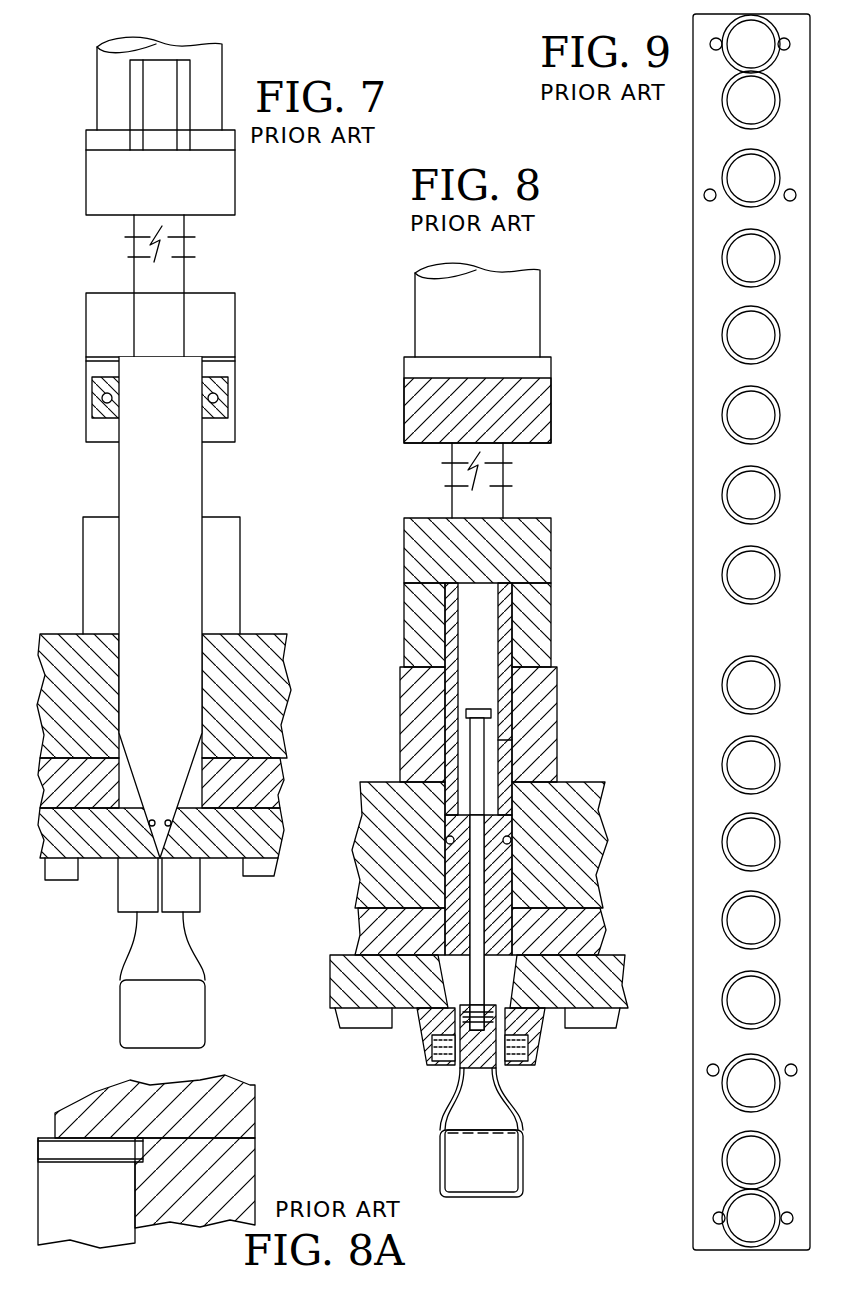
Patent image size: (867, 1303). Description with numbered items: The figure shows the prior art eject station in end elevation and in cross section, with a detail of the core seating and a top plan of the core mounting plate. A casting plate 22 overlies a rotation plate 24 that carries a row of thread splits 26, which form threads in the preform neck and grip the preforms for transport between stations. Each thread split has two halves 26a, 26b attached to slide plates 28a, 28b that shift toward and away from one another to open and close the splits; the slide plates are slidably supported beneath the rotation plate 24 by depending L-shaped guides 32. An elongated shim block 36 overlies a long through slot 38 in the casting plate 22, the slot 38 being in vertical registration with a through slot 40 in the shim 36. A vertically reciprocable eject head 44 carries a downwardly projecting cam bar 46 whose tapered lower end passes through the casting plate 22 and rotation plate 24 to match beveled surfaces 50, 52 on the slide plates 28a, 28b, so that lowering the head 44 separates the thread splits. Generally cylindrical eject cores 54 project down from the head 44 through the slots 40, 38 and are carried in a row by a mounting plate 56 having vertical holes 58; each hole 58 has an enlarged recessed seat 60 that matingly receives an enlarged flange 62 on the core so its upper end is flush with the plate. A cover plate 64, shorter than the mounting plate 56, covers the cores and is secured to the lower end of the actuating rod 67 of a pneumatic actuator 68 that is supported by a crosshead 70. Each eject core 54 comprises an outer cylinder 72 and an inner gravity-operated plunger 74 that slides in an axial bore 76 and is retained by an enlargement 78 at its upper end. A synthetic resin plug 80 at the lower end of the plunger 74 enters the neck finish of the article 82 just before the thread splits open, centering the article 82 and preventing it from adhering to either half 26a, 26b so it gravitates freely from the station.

In FIG. 7, the casting plate 22 is at (282, 684).
In FIG. 8, the casting plate 22 is at (590, 815).
In FIG. 7, the rotation plate 24 is at (280, 767).
In FIG. 8, the rotation plate 24 is at (590, 926).
In FIG. 7, the thread splits 26 is at (154, 942).
In FIG. 8, the thread splits 26 is at (503, 1067).
In FIG. 7, the thread split half 26a is at (200, 905).
In FIG. 8, the thread split half 26a is at (545, 1052).
In FIG. 7, the thread split half 26b is at (134, 920).
In FIG. 8, the thread split half 26b is at (428, 1066).
In FIG. 7, the slide plate 28a is at (235, 860).
In FIG. 8, the slide plate 28a is at (575, 1015).
In FIG. 7, the slide plate 28b is at (92, 860).
In FIG. 8, the slide plate 28b is at (388, 1015).
In FIG. 7, the L-shaped guides 32 is at (50, 884).
In FIG. 8, the L-shaped guides 32 is at (348, 1038).
In FIG. 7, the shim block 36 is at (230, 578).
In FIG. 8, the shim block 36 is at (552, 727).
In FIG. 8, the through slot 38 is at (445, 848).
In FIG. 8, the through slot 40 is at (448, 726).
In FIG. 7, the eject head 44 is at (74, 324).
In FIG. 7, the cam bar 46 is at (190, 478).
In FIG. 7, the beveled surface 50 is at (120, 858).
In FIG. 7, the beveled surface 52 is at (205, 858).
In FIG. 8, the eject cores 54 is at (490, 618).
In FIG. 8A, the eject cores 54 is at (33, 1142).
In FIG. 7, the mounting plate 56 is at (192, 399).
In FIG. 8, the mounting plate 56 is at (545, 618).
In FIG. 8A, the mounting plate 56 is at (245, 1169).
In FIG. 9, the mounting plate 56 is at (709, 632).
In FIG. 7, the vertical holes 58 is at (222, 372).
In FIG. 8, the vertical holes 58 is at (445, 640).
In FIG. 8A, the vertical holes 58 is at (133, 1204).
In FIG. 9, the vertical holes 58 is at (742, 683).
In FIG. 8A, the recessed seat 60 is at (135, 1165).
In FIG. 8A, the enlarged flange 62 is at (135, 1176).
In FIG. 7, the cover plate 64 is at (225, 322).
In FIG. 8, the cover plate 64 is at (545, 547).
In FIG. 8A, the cover plate 64 is at (245, 1101).
In FIG. 7, the actuating rod 67 is at (180, 267).
In FIG. 8, the actuating rod 67 is at (500, 491).
In FIG. 7, the pneumatic actuator 68 is at (238, 52).
In FIG. 8, the pneumatic actuator 68 is at (555, 315).
In FIG. 7, the crosshead 70 is at (225, 185).
In FIG. 8, the crosshead 70 is at (545, 408).
In FIG. 7, the outer cylinder 72 is at (135, 95).
In FIG. 8, the outer cylinder 72 is at (512, 768).
In FIG. 8, the plunger 74 is at (490, 892).
In FIG. 8, the axial bore 76 is at (490, 845).
In FIG. 8, the enlargement 78 is at (480, 705).
In FIG. 8, the plug 80 is at (490, 1090).
In FIG. 7, the article 82 is at (198, 1022).
In FIG. 8, the article 82 is at (523, 1176).